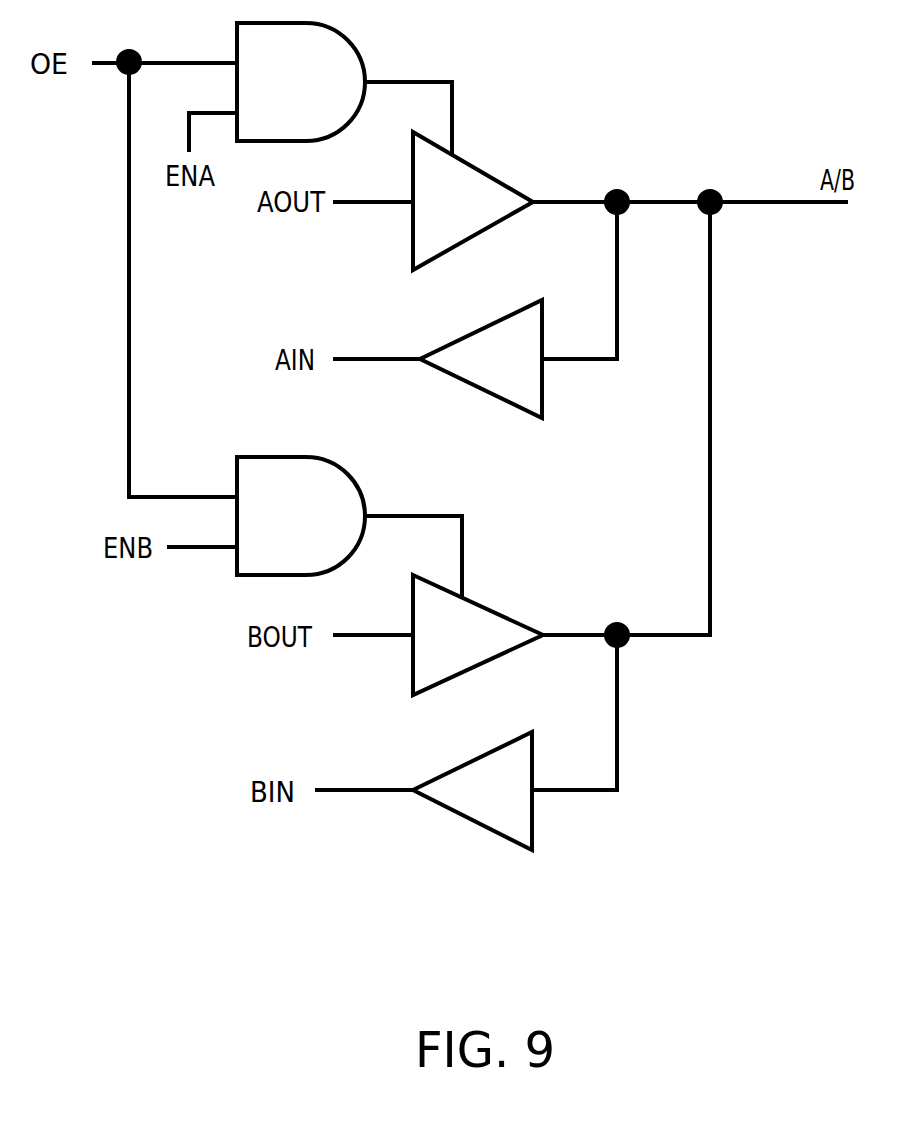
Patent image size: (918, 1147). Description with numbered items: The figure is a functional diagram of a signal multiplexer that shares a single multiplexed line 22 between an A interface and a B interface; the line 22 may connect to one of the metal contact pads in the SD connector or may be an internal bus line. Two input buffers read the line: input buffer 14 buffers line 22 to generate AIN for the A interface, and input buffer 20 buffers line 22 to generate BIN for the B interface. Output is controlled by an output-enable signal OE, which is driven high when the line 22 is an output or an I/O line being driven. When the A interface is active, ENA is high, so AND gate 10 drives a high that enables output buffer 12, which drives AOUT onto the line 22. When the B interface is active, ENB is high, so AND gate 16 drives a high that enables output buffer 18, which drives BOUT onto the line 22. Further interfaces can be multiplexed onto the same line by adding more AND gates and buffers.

The AND gate 10 is at (308, 101).
The output buffer 12 is at (465, 217).
The input buffer 14 is at (519, 375).
The AND gate 16 is at (308, 532).
The output buffer 18 is at (461, 651).
The input buffer 20 is at (509, 806).
The multiplexed line 22 is at (789, 204).